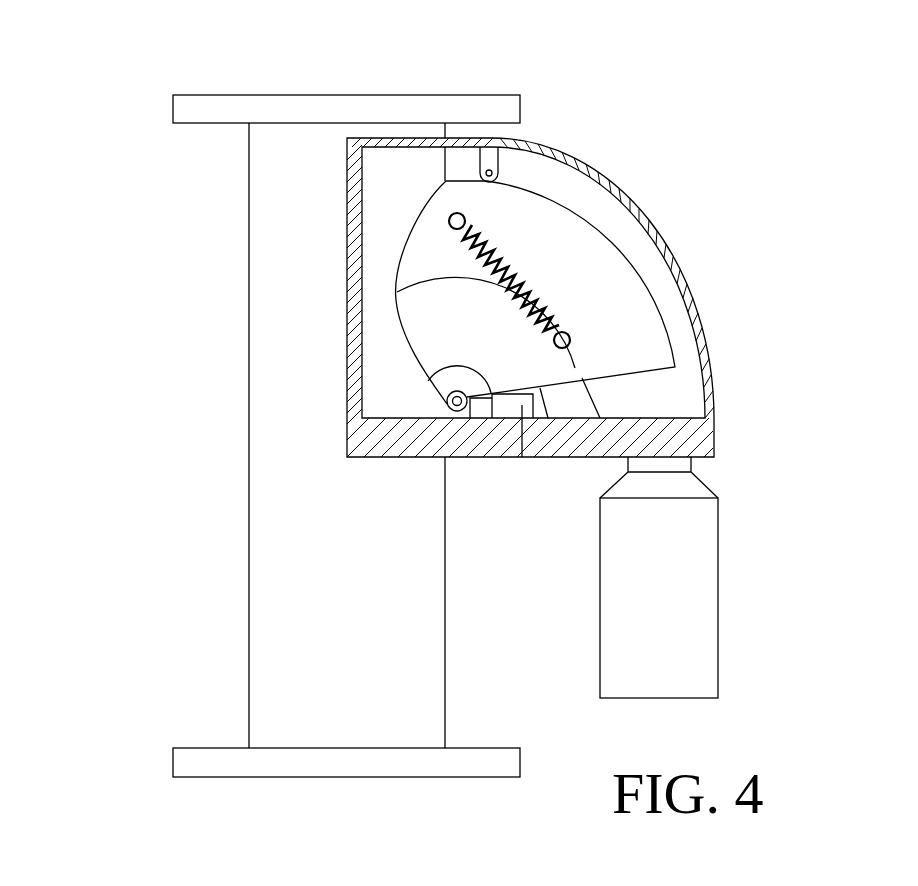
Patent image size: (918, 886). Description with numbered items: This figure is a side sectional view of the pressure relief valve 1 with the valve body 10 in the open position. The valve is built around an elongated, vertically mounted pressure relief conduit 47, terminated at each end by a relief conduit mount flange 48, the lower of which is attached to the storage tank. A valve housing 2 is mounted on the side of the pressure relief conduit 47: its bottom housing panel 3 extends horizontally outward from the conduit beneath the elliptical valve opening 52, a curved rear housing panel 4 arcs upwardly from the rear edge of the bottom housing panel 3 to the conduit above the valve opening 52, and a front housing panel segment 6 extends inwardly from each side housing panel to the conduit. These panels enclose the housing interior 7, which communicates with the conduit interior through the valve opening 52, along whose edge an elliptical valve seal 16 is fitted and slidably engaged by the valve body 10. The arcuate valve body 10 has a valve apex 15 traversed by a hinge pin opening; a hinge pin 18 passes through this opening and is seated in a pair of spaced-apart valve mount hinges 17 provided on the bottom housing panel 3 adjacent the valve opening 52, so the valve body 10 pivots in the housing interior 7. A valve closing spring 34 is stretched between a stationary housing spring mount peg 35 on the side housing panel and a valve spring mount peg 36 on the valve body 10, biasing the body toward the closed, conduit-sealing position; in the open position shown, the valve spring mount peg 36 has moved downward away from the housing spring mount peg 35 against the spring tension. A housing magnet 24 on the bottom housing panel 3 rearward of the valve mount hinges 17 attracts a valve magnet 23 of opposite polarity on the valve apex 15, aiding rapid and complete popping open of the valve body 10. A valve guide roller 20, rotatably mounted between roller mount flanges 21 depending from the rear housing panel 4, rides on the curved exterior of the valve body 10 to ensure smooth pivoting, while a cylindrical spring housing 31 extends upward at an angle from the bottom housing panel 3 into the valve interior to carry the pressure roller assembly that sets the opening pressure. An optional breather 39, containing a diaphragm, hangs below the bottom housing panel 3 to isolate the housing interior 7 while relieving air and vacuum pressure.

The pressure relief valve 1 is at (150, 66).
The valve housing 2 is at (682, 236).
The bottom housing panel 3 is at (562, 458).
The rear housing panel 4 is at (606, 182).
The front housing panel segment 6 is at (347, 177).
The housing interior 7 is at (676, 390).
The valve body 10 is at (676, 311).
The valve apex 15 is at (441, 392).
The valve seal 16 is at (717, 10).
The valve mount hinge 17 is at (447, 413).
The hinge pin 18 is at (492, 392).
The valve guide roller 20 is at (499, 178).
The roller mount flange 21 is at (488, 160).
The valve magnet 23 is at (518, 395).
The housing magnet 24 is at (522, 457).
The spring housing 31 is at (582, 403).
The valve closing spring 34 is at (512, 266).
The housing spring mount peg 35 is at (451, 213).
The valve spring mount peg 36 is at (571, 341).
The breather 39 is at (735, 567).
The pressure relief conduit 47 is at (236, 341).
The relief conduit mount flange 48 is at (173, 110).
The valve opening 52 is at (396, 283).